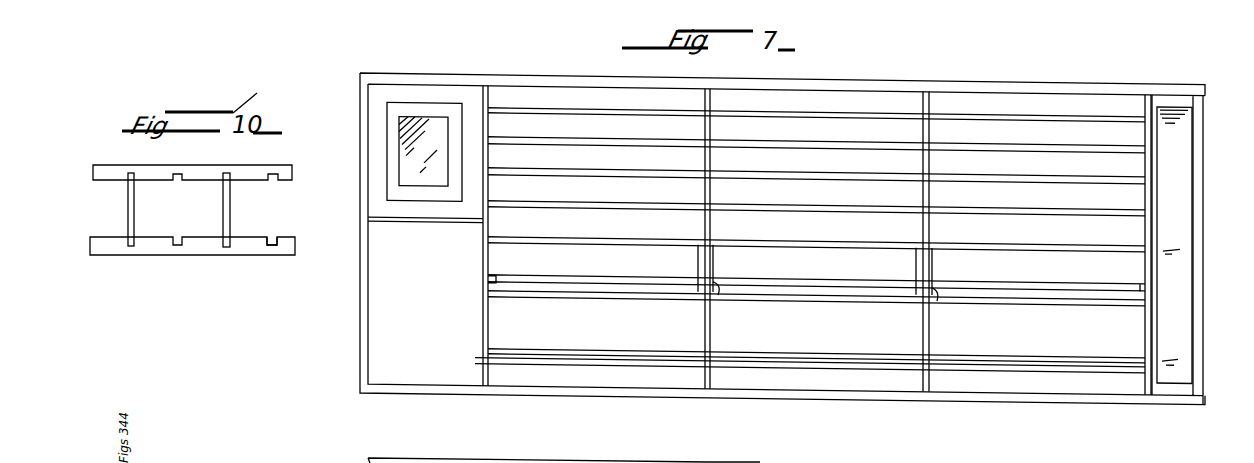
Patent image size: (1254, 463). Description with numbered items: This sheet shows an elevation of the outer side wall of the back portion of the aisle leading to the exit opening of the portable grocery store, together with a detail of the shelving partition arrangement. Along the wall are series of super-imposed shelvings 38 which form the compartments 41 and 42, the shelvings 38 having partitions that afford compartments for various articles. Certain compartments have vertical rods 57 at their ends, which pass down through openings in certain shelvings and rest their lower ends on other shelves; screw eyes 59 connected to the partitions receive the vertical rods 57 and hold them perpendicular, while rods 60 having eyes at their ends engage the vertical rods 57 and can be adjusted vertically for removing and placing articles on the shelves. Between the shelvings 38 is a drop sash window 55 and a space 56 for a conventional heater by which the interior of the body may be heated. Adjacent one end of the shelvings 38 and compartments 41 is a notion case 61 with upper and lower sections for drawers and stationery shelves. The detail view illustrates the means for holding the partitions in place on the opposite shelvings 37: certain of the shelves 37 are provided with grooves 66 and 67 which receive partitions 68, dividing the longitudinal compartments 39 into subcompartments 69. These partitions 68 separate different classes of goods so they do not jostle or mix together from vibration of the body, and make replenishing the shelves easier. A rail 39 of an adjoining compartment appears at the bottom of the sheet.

In FIG. 10, the shelvings 37 is at (200, 249).
In FIG. 7, the shelvings 38 is at (990, 175).
In FIG. 7, the compartment 39 is at (636, 462).
In FIG. 7, the compartment 41 is at (740, 133).
In FIG. 7, the compartment 42 is at (683, 373).
In FIG. 7, the drop sash window 55 is at (418, 117).
In FIG. 7, the space for heater 56 is at (390, 288).
In FIG. 7, the vertical rods 57 is at (713, 253).
In FIG. 7, the screw eyes 59 is at (716, 291).
In FIG. 7, the rods 60 is at (806, 283).
In FIG. 7, the notion case 61 is at (1175, 212).
In FIG. 10, the groove 66 is at (272, 242).
In FIG. 10, the groove 67 is at (187, 172).
In FIG. 10, the partitions 68 is at (129, 207).
In FIG. 10, the subcompartments 69 is at (197, 226).